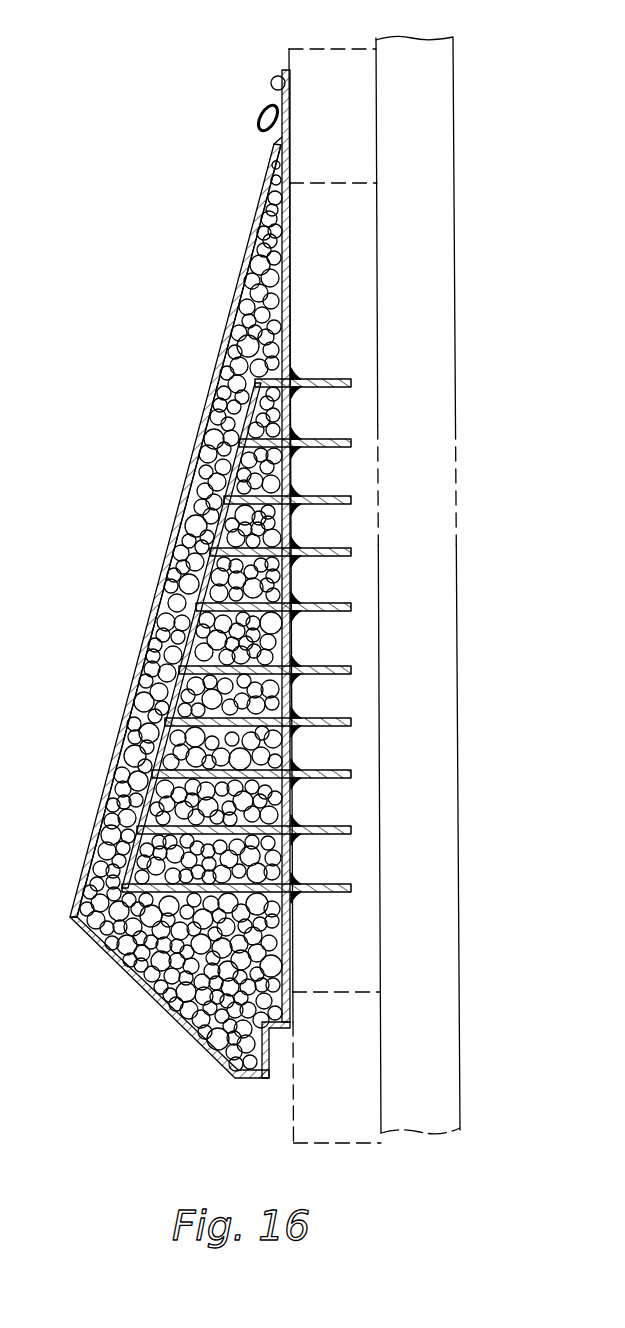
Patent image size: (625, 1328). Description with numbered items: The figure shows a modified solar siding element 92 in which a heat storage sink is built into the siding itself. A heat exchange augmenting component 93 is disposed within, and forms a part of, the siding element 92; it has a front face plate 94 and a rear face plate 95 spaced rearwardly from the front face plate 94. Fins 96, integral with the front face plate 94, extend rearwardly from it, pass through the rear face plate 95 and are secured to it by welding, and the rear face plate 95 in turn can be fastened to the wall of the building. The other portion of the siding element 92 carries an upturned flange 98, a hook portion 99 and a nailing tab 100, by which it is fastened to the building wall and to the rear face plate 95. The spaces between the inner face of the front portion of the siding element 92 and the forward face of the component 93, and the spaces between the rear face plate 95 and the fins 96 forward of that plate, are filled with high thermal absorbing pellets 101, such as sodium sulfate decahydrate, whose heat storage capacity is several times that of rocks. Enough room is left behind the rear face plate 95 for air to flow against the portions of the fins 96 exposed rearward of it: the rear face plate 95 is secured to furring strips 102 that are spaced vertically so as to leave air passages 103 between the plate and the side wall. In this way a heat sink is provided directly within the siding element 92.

The solar siding element 92 is at (197, 437).
The heat exchange augmenting component 93 is at (197, 578).
The front face plate 94 is at (145, 640).
The rear face plate 95 is at (288, 330).
The fins 96 is at (348, 667).
The upturned flange 98 is at (277, 1057).
The hook portion 99 is at (265, 120).
The nailing tab 100 is at (290, 77).
The high thermal absorbing pellets 101 is at (150, 970).
The furring strips 102 is at (346, 125).
The air passages 103 is at (324, 484).